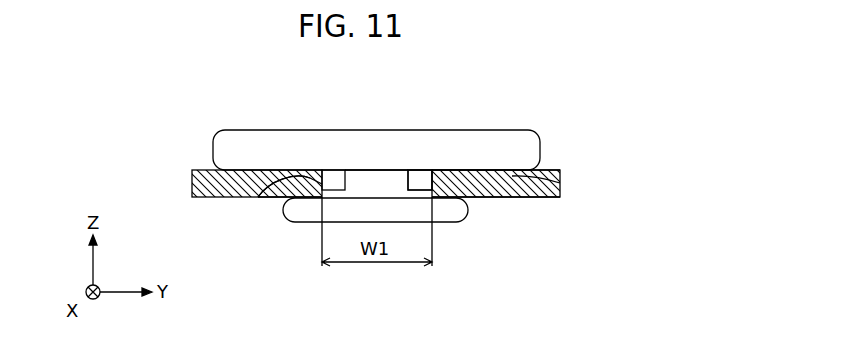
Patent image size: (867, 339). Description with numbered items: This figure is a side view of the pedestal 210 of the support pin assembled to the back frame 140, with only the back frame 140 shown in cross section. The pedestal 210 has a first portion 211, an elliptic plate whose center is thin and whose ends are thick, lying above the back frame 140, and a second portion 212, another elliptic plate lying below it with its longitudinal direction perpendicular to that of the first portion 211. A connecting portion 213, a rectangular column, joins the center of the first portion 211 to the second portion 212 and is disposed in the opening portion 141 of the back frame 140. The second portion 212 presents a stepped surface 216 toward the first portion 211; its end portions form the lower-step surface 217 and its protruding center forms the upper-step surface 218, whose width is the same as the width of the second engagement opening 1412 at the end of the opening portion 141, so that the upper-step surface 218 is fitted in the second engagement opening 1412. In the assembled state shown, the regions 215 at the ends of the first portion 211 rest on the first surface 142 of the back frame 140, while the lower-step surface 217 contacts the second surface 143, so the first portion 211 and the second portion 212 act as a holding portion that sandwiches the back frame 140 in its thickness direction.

The pedestal 210 is at (455, 246).
The first portion 211 is at (232, 155).
The second portion 212 is at (307, 215).
The connecting portion 213 is at (388, 182).
The region 215 is at (560, 183).
The surface 216 is at (184, 210).
The lower-step surface 217 is at (292, 198).
The upper-step surface 218 is at (295, 180).
The back frame 140 is at (205, 186).
The opening portion 141 is at (423, 172).
The second engagement opening 1412 is at (420, 180).
The first surface 142 is at (556, 170).
The second surface 143 is at (552, 198).